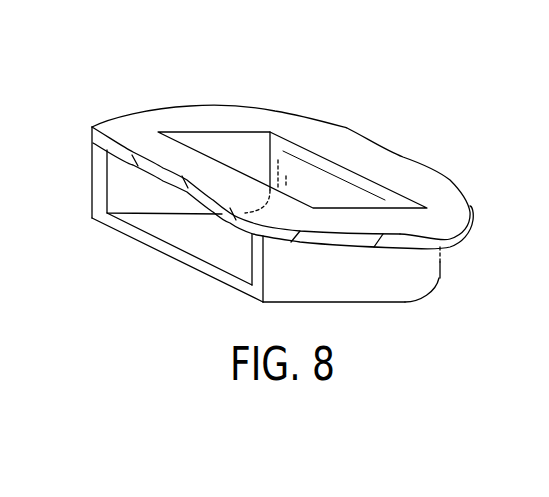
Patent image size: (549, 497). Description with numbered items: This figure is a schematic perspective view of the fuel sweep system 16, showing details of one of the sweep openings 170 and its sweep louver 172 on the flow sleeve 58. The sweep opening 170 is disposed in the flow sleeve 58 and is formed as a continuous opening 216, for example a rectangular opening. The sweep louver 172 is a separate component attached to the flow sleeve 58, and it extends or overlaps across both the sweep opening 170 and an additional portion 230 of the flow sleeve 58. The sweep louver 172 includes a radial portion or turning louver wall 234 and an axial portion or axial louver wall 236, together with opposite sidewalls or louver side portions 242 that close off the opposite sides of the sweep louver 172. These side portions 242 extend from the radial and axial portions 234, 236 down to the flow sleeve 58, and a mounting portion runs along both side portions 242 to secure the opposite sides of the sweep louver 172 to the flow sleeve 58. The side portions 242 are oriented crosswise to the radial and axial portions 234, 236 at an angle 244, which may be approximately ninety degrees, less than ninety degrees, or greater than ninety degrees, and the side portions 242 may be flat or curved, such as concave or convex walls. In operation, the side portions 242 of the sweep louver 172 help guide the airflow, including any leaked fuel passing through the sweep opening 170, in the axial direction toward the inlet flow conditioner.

The fuel sweep system 16 is at (272, 202).
The flow sleeve 58 is at (274, 142).
The sweep opening 170 is at (310, 150).
The sweep louver 172 is at (375, 279).
The continuous opening 216 is at (380, 185).
The additional portion of the flow sleeve 230 is at (120, 128).
The turning louver wall 234 is at (432, 298).
The axial louver wall 236 is at (157, 252).
The louver side portion 242 is at (92, 180).
The angle 244 is at (245, 253).